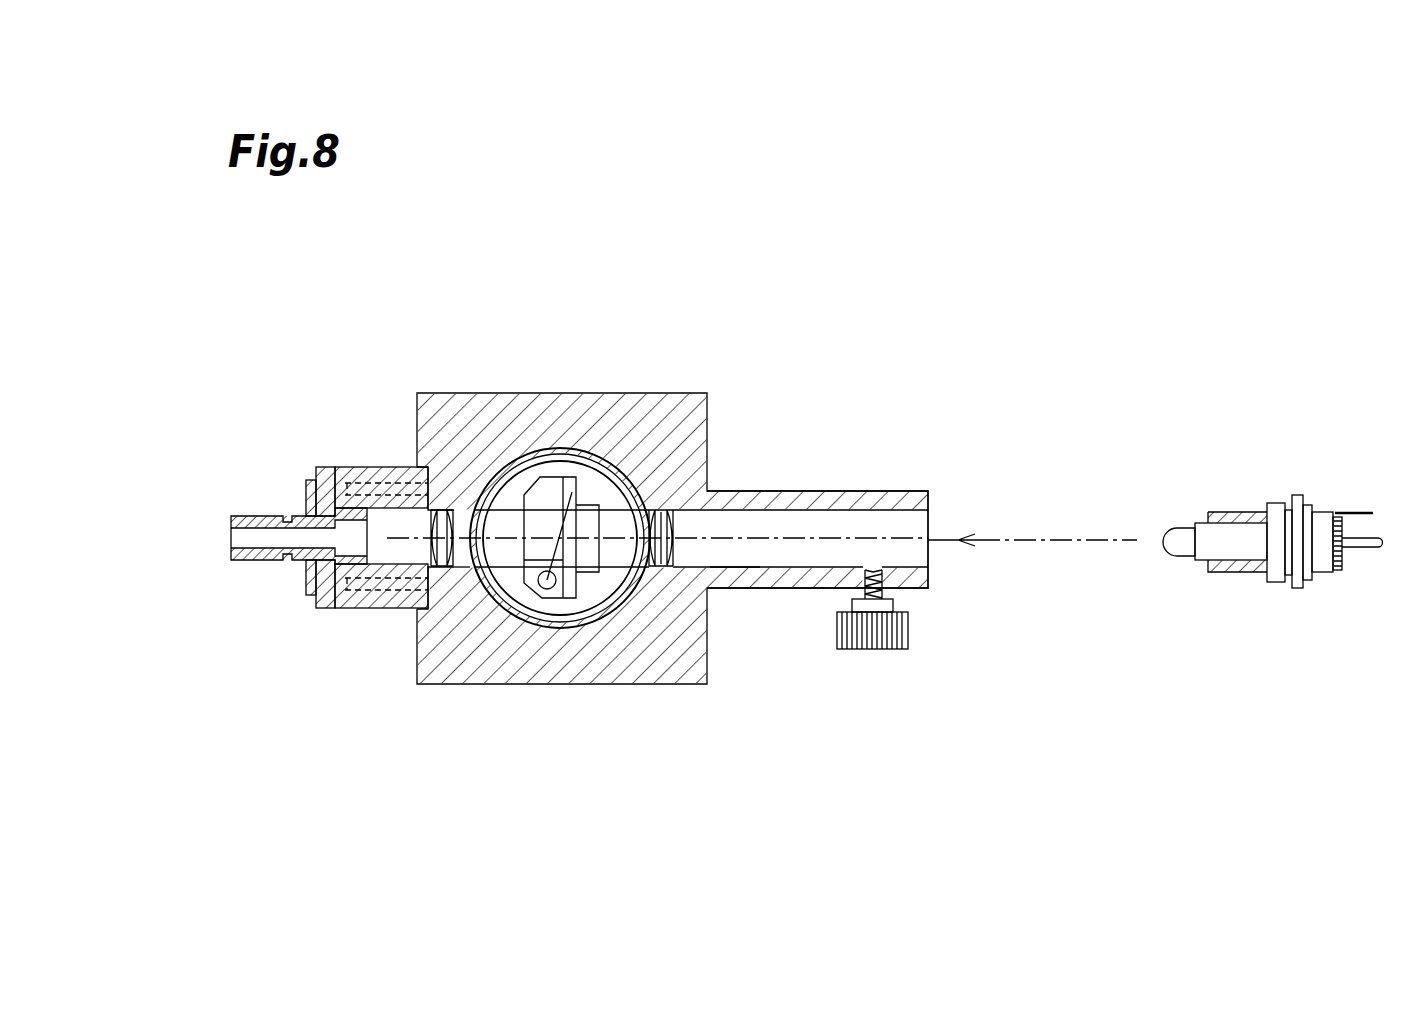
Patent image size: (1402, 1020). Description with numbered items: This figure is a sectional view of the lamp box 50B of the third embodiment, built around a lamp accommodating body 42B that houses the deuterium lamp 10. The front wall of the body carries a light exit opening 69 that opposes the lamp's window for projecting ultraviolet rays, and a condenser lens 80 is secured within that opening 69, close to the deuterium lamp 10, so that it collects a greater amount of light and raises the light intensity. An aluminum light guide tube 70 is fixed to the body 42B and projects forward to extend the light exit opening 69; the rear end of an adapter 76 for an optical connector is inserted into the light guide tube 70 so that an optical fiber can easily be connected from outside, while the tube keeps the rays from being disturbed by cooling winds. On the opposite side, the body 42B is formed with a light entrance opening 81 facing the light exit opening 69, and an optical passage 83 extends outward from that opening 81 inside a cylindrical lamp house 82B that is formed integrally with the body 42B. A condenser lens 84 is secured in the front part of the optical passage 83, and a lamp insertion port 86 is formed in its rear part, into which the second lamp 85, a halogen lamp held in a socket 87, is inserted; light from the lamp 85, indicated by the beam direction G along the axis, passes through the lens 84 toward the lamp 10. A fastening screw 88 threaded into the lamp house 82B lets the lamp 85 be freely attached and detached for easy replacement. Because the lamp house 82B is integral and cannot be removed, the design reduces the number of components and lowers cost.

The lamp box 50B is at (757, 352).
The lamp accommodating body 42B is at (557, 452).
The condenser lens 80 is at (443, 508).
The condenser lens 84 is at (657, 507).
The light entrance opening 81 is at (662, 567).
The light exit opening 69 is at (463, 555).
The light guide tube 70 is at (365, 470).
The adapter 76 is at (245, 515).
The deuterium lamp 10 is at (563, 620).
The gas G is at (617, 545).
The lamp house 82B is at (813, 493).
The optical passage 83 is at (742, 560).
The lamp insertion port 86 is at (922, 553).
The fastening screw 88 is at (857, 588).
The second lamp 85 is at (1190, 535).
The socket 87 is at (1238, 537).